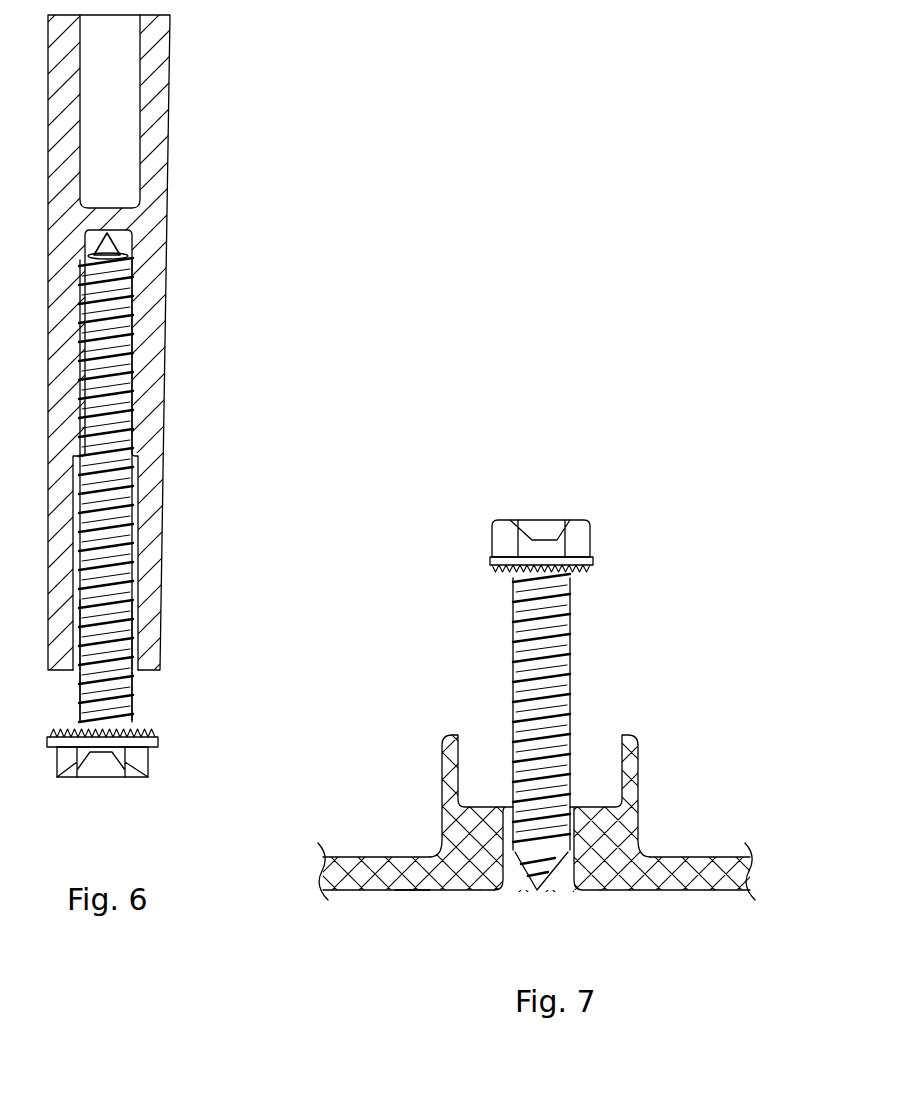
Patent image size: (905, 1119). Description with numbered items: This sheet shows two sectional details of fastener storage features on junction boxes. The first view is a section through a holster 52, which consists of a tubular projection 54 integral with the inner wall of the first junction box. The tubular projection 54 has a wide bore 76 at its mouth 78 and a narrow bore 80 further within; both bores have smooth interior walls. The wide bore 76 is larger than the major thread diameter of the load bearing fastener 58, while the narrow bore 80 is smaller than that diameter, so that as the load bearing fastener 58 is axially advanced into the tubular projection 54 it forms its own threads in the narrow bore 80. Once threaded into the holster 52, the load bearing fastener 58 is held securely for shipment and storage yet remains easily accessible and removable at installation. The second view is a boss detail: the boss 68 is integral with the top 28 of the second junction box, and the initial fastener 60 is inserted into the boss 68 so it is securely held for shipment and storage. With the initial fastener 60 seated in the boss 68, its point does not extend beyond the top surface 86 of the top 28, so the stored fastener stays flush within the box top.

In FIG. 6, the tubular projection 54 is at (170, 142).
In FIG. 6, the narrow bore 80 is at (137, 325).
In FIG. 6, the wide bore 76 is at (135, 642).
In FIG. 6, the mouth 78 is at (128, 670).
In FIG. 6, the load bearing fastener 58 is at (150, 762).
In FIG. 6, the holster 52 is at (290, 386).
In FIG. 7, the initial fastener 60 is at (541, 520).
In FIG. 7, the boss 68 is at (638, 757).
In FIG. 7, the top 28 is at (693, 893).
In FIG. 7, the top surface 86 is at (412, 912).